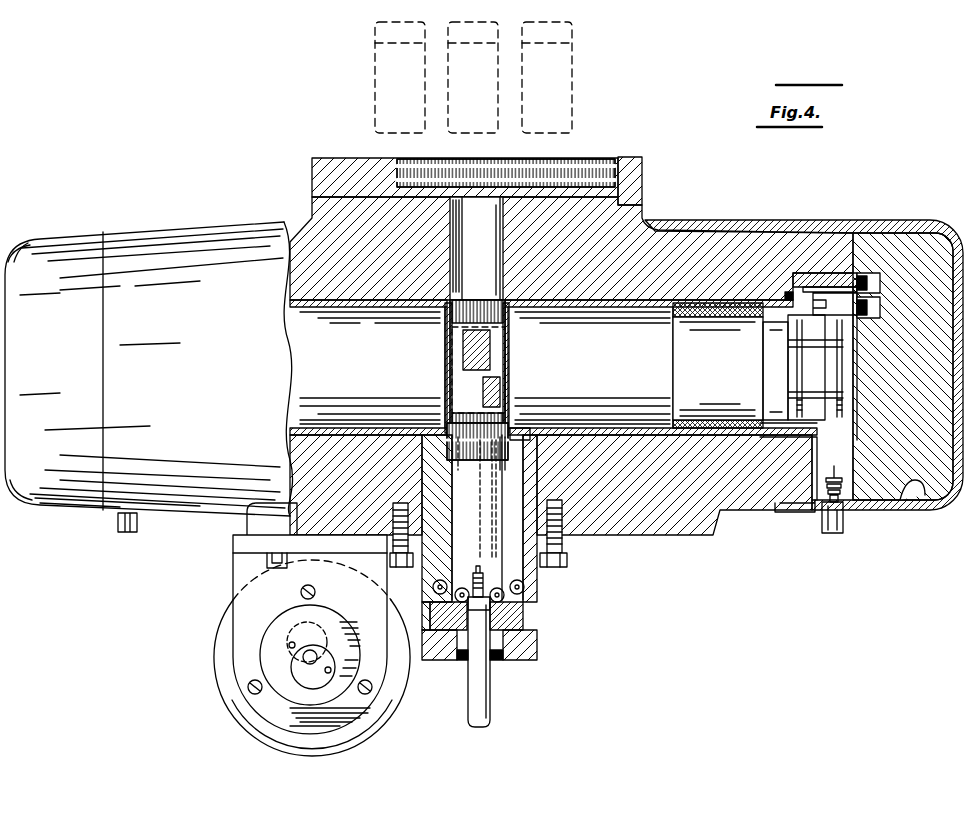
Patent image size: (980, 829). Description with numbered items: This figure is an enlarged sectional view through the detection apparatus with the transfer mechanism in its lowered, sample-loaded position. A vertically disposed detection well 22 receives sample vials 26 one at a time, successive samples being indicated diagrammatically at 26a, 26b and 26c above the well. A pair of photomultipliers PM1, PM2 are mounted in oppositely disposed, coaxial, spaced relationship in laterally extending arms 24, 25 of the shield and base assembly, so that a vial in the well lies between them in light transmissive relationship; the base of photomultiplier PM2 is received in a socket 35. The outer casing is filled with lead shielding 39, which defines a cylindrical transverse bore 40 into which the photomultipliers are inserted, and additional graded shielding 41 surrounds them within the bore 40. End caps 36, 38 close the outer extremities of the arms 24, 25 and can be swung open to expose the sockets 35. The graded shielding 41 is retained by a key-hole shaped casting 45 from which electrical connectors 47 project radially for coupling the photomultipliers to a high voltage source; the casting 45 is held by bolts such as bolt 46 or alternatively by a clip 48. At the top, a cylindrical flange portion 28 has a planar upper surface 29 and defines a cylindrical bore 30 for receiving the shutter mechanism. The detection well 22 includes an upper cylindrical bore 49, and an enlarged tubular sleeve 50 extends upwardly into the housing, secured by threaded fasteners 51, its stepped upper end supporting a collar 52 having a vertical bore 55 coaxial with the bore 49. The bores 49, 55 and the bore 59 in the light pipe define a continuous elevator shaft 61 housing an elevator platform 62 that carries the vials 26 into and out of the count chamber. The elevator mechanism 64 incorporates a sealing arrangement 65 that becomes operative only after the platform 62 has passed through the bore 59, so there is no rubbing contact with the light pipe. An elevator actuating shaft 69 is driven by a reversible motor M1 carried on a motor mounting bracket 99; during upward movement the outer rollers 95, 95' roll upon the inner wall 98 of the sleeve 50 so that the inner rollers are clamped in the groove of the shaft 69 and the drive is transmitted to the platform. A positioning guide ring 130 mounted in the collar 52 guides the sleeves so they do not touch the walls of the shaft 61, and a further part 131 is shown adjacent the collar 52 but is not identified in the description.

The detection well 22 is at (488, 205).
The arm 24 is at (206, 234).
The arm 25 is at (786, 222).
The sample vial 26 is at (490, 381).
The sample 26a is at (374, 80).
The sample 26b is at (448, 121).
The sample 26c is at (572, 92).
The cylindrical flange portion 28 is at (642, 174).
The planar upper surface 29 is at (338, 158).
The cylindrical bore 30 is at (606, 159).
The socket 35 is at (758, 316).
The end cap 36 is at (60, 247).
The end cap 38 is at (946, 240).
The lead shield 39 is at (655, 252).
The cylindrical transverse bore 40 is at (590, 308).
The graded shielding means 41 is at (538, 310).
The key-hole shaped casting 45 is at (815, 480).
The bolt 46 is at (827, 280).
The electrical connector 47 is at (830, 534).
The clip 48 is at (810, 517).
The upper cylindrical bore 49 is at (456, 210).
The tubular sleeve 50 is at (537, 618).
The threaded fastener 51 is at (396, 568).
The collar 52 is at (520, 432).
The vertical bore 55 is at (488, 398).
The bore 59 is at (503, 352).
The elevator shaft 61 is at (446, 342).
The elevator platform 62 is at (463, 420).
The elevator mechanism 64 is at (460, 672).
The sealing arrangement 65 is at (477, 450).
The elevator actuating shaft 69 is at (484, 702).
The outer roller 95 is at (461, 581).
The outer roller 95' is at (536, 591).
The inner wall 98 is at (437, 524).
The motor mounting bracket 99 is at (236, 573).
The positioning guide ring 130 is at (503, 460).
The seal 131 is at (532, 428).
The reversible motor M1 is at (216, 645).
The photomultiplier PM1 is at (373, 367).
The photomultiplier PM2 is at (589, 367).